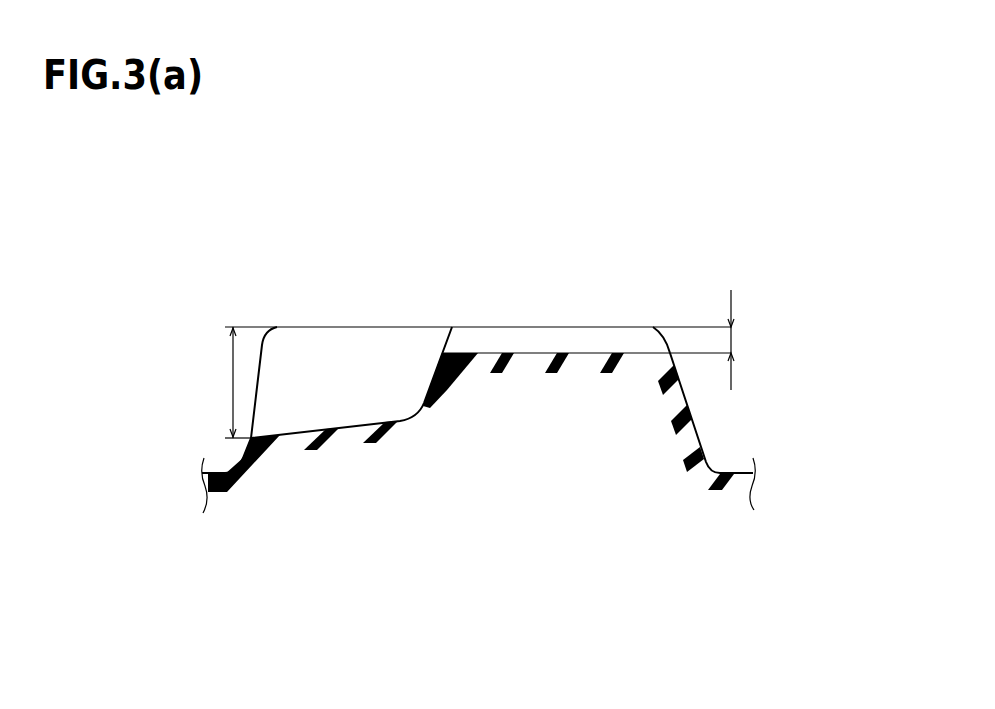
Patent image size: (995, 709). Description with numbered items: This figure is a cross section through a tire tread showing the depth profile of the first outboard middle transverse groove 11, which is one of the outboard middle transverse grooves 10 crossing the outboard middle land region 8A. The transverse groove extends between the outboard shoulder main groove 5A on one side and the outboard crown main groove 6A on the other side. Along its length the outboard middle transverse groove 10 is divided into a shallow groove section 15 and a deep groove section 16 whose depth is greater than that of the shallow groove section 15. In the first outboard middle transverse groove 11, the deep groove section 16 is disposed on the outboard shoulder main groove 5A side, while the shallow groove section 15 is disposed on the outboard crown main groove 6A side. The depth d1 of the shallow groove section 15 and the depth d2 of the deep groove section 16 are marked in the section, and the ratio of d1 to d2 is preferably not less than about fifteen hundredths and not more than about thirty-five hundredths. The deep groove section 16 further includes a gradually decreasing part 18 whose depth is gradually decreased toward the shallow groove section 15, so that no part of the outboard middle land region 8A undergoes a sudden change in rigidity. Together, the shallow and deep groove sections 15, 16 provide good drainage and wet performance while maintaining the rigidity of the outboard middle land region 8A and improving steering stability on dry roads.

The outboard shoulder main groove 5A is at (228, 458).
The outboard crown main groove 6A is at (722, 460).
The outboard middle land region 8A is at (592, 327).
The outboard middle transverse groove 10 is at (436, 303).
The first outboard middle transverse groove 11 is at (436, 303).
The shallow groove section 15 is at (555, 295).
The deep groove section 16 is at (352, 385).
The gradually decreasing part 18 is at (303, 432).
The depth of the shallow groove section d1 is at (754, 340).
The depth of the deep groove section d2 is at (220, 382).